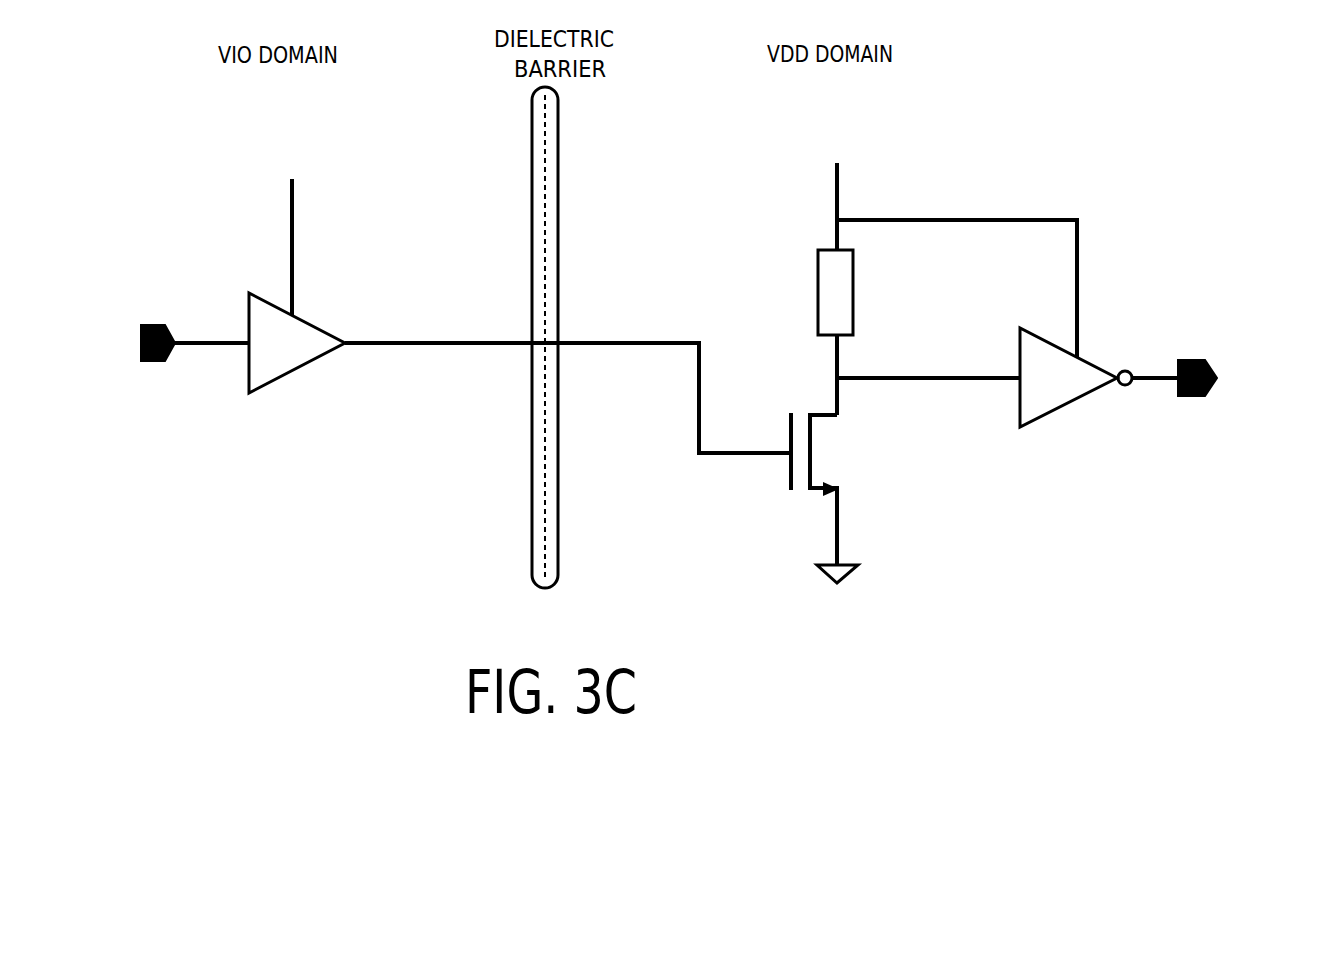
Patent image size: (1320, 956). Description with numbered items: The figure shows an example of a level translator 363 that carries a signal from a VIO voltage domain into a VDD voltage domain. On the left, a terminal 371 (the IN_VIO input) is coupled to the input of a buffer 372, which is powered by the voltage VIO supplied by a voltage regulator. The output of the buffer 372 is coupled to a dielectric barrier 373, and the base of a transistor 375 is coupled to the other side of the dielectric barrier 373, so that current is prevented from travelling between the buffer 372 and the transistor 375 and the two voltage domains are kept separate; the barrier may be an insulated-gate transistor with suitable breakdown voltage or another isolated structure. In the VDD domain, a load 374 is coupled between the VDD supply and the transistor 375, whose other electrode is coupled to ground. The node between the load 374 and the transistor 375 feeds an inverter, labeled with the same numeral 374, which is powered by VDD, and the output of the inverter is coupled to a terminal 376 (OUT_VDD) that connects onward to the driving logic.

The level translator 363 is at (1023, 139).
The terminal 371 is at (155, 325).
The buffer 372 is at (320, 330).
The dielectric barrier 373 is at (553, 150).
The load 374 is at (855, 302).
The transistor 375 is at (788, 475).
The terminal 376 is at (1198, 358).